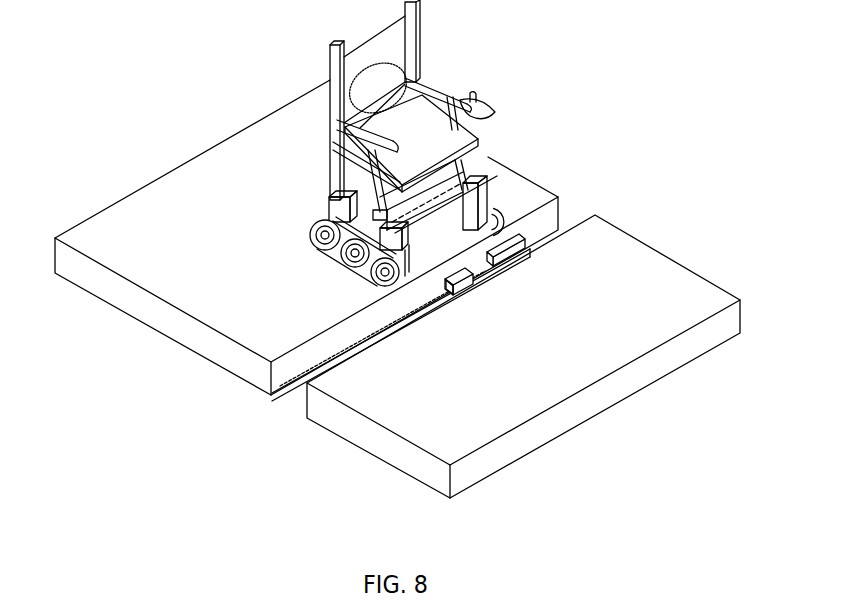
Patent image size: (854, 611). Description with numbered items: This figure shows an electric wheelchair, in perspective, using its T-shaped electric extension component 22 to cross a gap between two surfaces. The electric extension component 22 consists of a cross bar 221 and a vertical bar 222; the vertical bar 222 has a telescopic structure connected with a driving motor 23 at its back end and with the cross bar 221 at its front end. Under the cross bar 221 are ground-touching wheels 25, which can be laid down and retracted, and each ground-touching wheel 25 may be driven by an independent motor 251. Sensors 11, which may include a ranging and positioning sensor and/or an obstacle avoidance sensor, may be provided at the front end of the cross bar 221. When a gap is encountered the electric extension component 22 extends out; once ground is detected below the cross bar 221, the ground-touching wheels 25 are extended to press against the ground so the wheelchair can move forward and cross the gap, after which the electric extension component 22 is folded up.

The sensors 11 is at (500, 270).
The electric extension component 22 is at (432, 230).
The driving motor 23 is at (458, 151).
The ground-touching wheels 25 is at (527, 251).
The cross bar 221 is at (474, 296).
The vertical bar 222 is at (498, 196).
The independent motor 251 is at (446, 283).